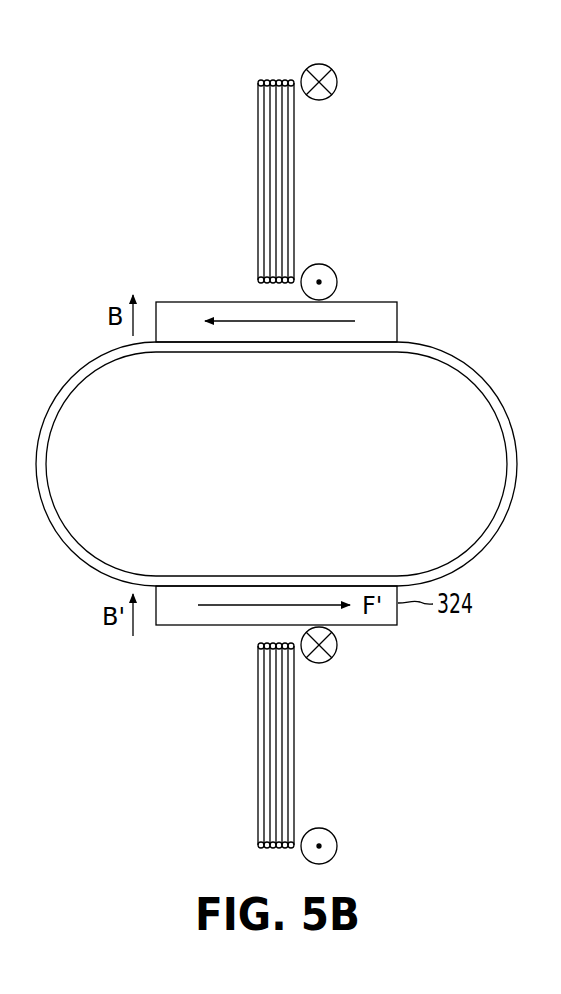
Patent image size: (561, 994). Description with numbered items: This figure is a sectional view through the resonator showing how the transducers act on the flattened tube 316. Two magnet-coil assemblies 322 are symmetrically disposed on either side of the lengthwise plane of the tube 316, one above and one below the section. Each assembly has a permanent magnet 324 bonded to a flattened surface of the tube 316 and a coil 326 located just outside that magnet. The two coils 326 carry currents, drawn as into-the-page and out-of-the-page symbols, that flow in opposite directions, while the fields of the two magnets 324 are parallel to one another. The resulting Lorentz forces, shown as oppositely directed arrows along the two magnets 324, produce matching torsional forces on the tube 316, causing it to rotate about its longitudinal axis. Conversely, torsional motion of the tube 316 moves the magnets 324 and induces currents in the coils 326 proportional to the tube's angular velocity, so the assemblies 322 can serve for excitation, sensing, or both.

The flattened tube 316 is at (506, 408).
The magnet-coil assembly 322 is at (386, 80).
The permanent magnet 324 is at (398, 322).
The coil 326 is at (296, 180).